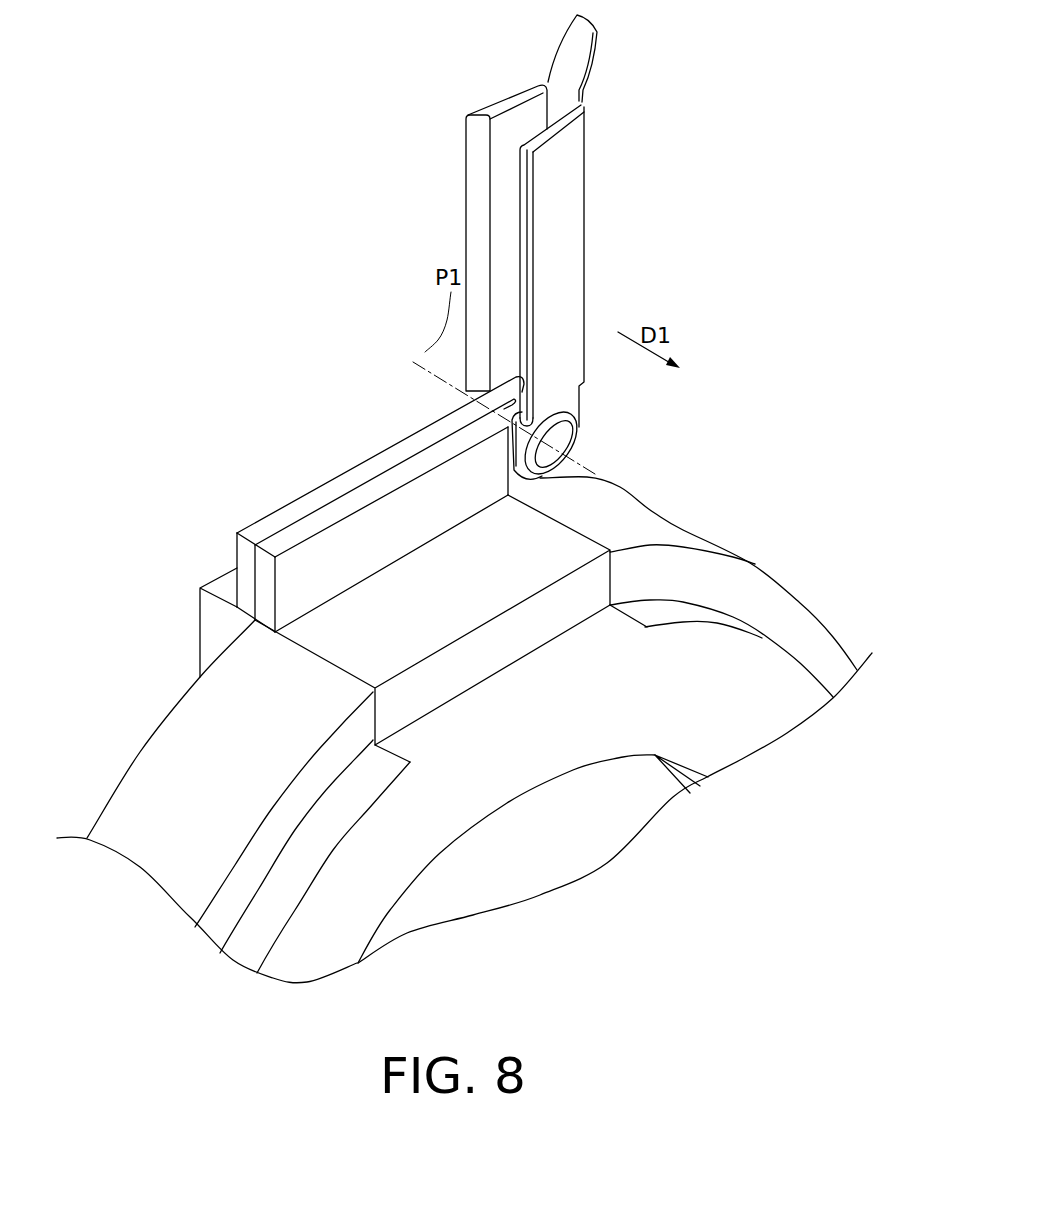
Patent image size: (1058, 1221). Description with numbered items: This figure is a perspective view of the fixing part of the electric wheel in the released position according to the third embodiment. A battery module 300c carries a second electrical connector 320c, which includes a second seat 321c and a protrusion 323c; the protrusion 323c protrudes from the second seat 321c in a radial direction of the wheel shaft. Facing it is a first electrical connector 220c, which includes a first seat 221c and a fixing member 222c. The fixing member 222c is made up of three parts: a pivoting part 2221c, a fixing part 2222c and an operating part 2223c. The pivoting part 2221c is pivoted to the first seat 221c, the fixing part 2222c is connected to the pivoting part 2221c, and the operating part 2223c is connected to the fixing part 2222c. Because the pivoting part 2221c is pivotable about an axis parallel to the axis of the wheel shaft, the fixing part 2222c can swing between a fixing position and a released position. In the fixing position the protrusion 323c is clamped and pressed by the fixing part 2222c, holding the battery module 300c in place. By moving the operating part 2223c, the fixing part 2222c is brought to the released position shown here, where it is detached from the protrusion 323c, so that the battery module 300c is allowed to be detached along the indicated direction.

The first electrical connector 220c is at (247, 498).
The first seat 221c is at (205, 617).
The fixing member 222c is at (767, 88).
The pivoting part 2221c is at (580, 428).
The fixing part 2222c is at (566, 262).
The operating part 2223c is at (585, 152).
The battery module 300c is at (774, 755).
The second electrical connector 320c is at (585, 530).
The second seat 321c is at (575, 563).
The protrusion 323c is at (200, 663).